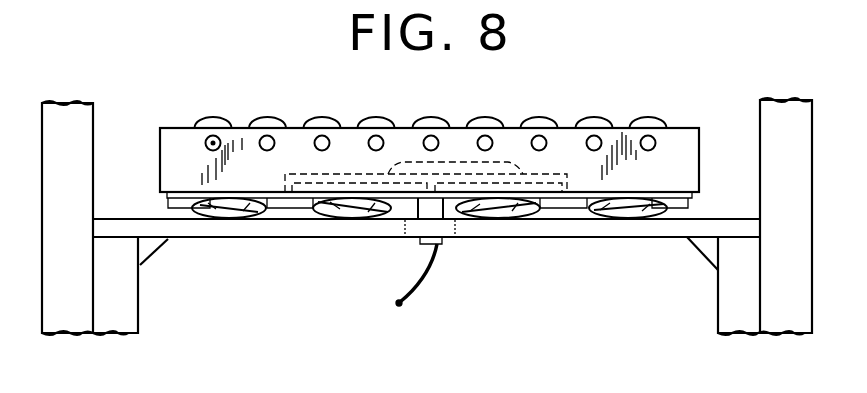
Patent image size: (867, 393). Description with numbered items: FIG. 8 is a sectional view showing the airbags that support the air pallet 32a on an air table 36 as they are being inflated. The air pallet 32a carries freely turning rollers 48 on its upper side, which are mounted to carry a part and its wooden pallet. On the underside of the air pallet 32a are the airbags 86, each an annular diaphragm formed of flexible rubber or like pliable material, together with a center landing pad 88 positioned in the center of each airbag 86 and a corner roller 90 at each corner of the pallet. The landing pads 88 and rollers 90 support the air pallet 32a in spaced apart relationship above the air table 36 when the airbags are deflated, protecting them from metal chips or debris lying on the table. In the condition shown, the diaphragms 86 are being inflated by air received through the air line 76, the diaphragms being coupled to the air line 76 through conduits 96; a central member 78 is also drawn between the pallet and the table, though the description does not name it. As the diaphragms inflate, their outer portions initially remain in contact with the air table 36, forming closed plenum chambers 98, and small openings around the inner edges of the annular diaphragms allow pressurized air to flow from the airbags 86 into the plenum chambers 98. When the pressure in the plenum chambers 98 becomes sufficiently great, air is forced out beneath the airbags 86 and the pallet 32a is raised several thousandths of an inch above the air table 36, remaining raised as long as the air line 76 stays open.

The air pallet 32a is at (172, 131).
The freely turning rollers 48 is at (427, 110).
The conduits 96 is at (426, 166).
The air table 36 is at (473, 232).
The corner roller 90 is at (663, 263).
The center landing pad 88 is at (582, 262).
The airbag 86 is at (512, 258).
The plenum chambers 98 is at (553, 280).
The center post 78 is at (407, 207).
The air line 76 is at (413, 297).